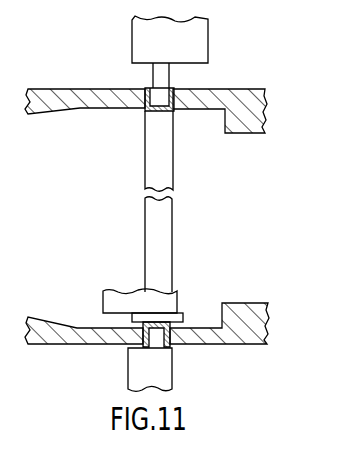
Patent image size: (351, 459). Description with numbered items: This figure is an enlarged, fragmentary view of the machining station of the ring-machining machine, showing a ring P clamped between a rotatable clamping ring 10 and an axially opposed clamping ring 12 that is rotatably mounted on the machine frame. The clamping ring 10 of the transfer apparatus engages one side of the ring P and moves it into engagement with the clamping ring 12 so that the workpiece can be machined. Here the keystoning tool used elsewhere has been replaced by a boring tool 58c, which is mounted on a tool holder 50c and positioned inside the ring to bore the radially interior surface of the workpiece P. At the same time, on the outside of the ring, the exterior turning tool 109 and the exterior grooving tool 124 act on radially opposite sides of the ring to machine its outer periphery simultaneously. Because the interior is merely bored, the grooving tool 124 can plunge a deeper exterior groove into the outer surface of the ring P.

The grooving tool 124 is at (162, 77).
The ring P is at (168, 224).
The tool holder 50c is at (120, 295).
The boring tool 58c is at (178, 318).
The clamping ring 12 is at (63, 338).
The rotatable clamping ring 10 is at (220, 340).
The machining tool 109 is at (137, 365).